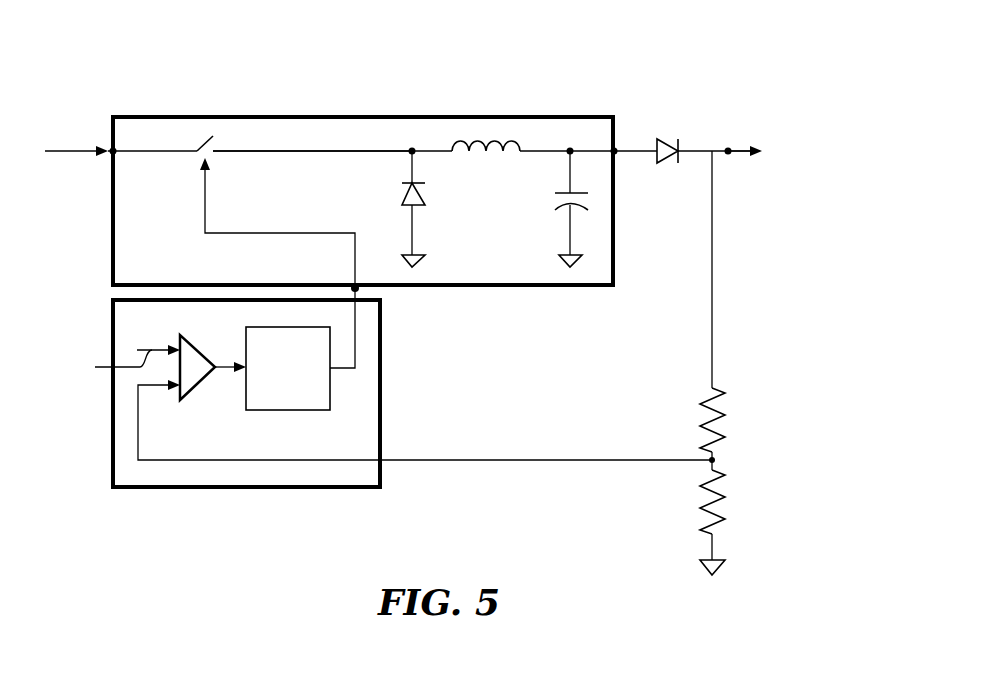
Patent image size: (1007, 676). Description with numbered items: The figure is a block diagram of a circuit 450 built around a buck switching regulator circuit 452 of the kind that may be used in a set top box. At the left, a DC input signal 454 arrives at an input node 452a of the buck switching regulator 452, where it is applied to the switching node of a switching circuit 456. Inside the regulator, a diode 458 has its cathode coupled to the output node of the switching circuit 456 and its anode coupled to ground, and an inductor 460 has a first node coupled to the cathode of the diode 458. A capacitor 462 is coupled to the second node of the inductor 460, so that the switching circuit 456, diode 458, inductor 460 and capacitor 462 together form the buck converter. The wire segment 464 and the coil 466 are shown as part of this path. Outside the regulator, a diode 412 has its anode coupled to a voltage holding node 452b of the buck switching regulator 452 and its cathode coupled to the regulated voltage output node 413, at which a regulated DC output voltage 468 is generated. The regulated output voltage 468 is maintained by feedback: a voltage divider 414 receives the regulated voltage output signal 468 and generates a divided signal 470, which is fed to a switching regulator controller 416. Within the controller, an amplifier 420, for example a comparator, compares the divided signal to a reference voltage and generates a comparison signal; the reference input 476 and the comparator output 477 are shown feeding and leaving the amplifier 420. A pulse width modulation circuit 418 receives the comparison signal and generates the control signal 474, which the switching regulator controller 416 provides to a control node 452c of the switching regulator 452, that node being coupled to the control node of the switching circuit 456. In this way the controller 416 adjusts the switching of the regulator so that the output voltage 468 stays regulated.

The circuit 450 is at (707, 32).
The buck switching regulator circuit 452 is at (516, 117).
The input node 452a is at (113, 122).
The voltage holding node 452b is at (620, 148).
The control node 452c is at (350, 283).
The DC input signal 454 is at (68, 155).
The switching circuit 456 is at (215, 142).
The diode 458 is at (402, 197).
The inductor 460 is at (452, 143).
The capacitor 462 is at (557, 208).
The wire segment 464 is at (313, 153).
The inductor 466 is at (536, 155).
The regulated DC output voltage 468 is at (752, 158).
The divided signal 470 is at (522, 460).
The control signal 474 is at (295, 233).
The reference voltage input Vref 476 is at (118, 352).
The comparator output line 477 is at (222, 370).
The amplifier 420 is at (200, 345).
The pulse width modulation circuit 418 is at (288, 368).
The switching regulator controller 416 is at (230, 487).
The diode 412 is at (667, 167).
The regulated voltage output node 413 is at (729, 147).
The voltage divider 414 is at (715, 407).